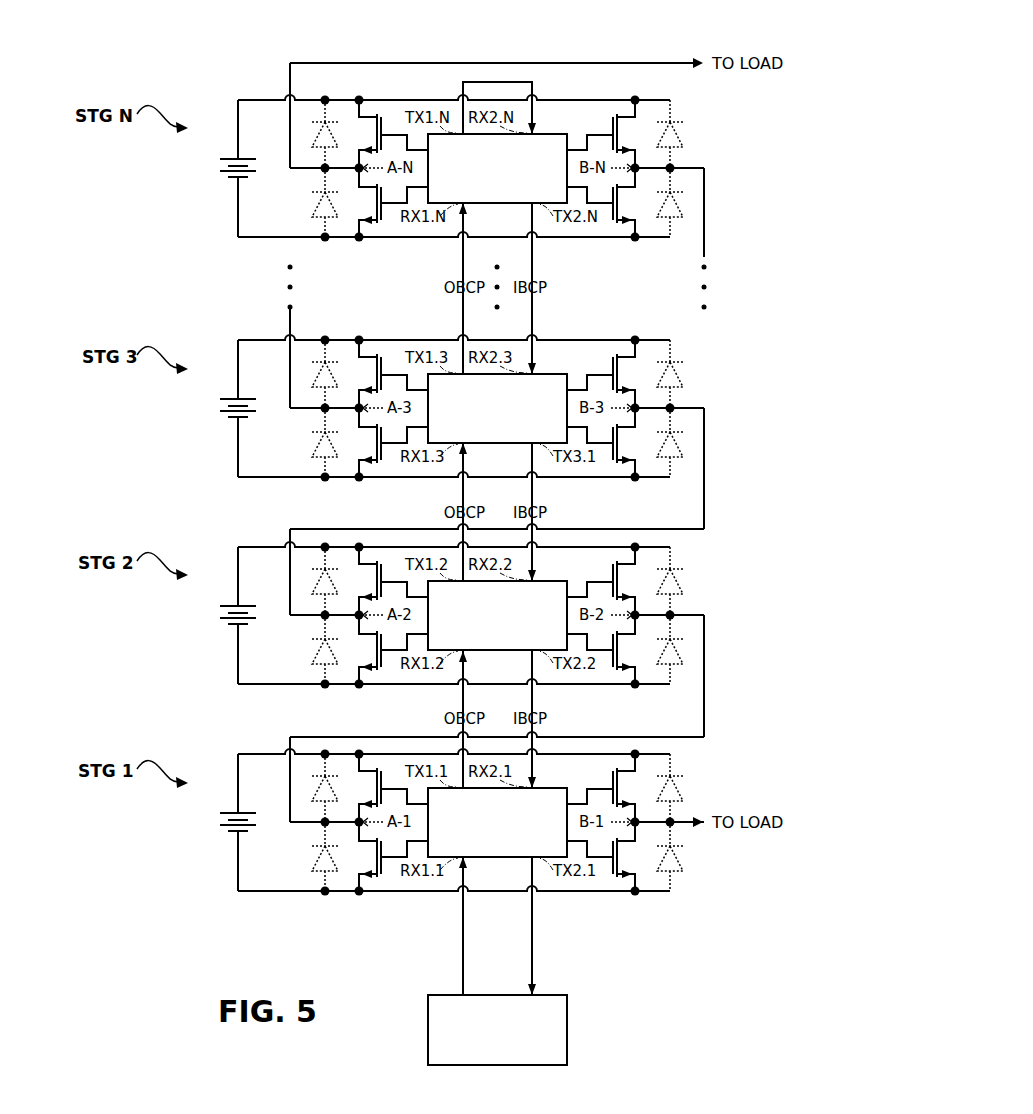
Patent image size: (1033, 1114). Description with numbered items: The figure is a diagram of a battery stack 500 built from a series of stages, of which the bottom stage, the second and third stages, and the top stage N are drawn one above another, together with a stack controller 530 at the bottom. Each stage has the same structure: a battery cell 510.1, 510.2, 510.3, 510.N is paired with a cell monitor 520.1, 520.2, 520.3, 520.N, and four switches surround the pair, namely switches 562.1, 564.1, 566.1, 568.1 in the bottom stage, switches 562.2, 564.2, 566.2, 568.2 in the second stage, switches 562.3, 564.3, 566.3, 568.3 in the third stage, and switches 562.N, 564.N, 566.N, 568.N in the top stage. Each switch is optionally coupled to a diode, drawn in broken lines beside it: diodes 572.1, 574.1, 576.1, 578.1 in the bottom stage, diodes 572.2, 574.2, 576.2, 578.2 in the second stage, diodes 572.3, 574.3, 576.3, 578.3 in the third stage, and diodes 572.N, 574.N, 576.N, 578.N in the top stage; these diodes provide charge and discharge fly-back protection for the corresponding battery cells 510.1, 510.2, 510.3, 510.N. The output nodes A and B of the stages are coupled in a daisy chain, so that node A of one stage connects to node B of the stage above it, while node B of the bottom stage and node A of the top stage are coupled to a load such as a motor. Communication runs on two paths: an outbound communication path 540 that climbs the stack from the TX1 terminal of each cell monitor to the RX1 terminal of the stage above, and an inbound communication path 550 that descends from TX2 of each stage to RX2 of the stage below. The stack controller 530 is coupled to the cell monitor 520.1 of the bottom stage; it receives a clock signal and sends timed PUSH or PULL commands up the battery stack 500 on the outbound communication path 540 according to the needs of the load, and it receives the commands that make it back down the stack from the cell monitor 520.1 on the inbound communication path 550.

The battery stack 500 is at (273, 1056).
The stack controller 530 is at (497, 1030).
The outbound communication path 540 is at (426, 926).
The inbound communication path 550 is at (568, 926).
The battery cell 510.N is at (234, 179).
The cell monitor 520.N is at (497, 168).
The switch 562.N is at (383, 127).
The switch 564.N is at (384, 222).
The switch 566.N is at (612, 125).
The switch 568.N is at (610, 223).
The diode 572.N is at (305, 137).
The diode 574.N is at (305, 203).
The diode 576.N is at (690, 133).
The diode 578.N is at (690, 202).
The battery cell 510.3 is at (234, 420).
The cell monitor 520.3 is at (497, 408).
The switch 562.3 is at (383, 367).
The switch 564.3 is at (384, 462).
The switch 566.3 is at (612, 365).
The switch 568.3 is at (610, 462).
The diode 572.3 is at (305, 377).
The diode 574.3 is at (305, 443).
The diode 576.3 is at (690, 373).
The diode 578.3 is at (690, 442).
The battery cell 510.2 is at (234, 627).
The cell monitor 520.2 is at (497, 615).
The switch 562.2 is at (383, 575).
The switch 564.2 is at (384, 668).
The switch 566.2 is at (612, 573).
The switch 568.2 is at (610, 668).
The diode 572.2 is at (305, 583).
The diode 574.2 is at (305, 650).
The diode 576.2 is at (690, 580).
The diode 578.2 is at (690, 649).
The battery cell 510.1 is at (234, 834).
The cell monitor 520.1 is at (497, 822).
The switch 562.1 is at (383, 782).
The switch 564.1 is at (384, 876).
The switch 566.1 is at (612, 780).
The switch 568.1 is at (612, 876).
The diode 572.1 is at (305, 790).
The diode 574.1 is at (305, 857).
The diode 576.1 is at (690, 787).
The diode 578.1 is at (690, 856).